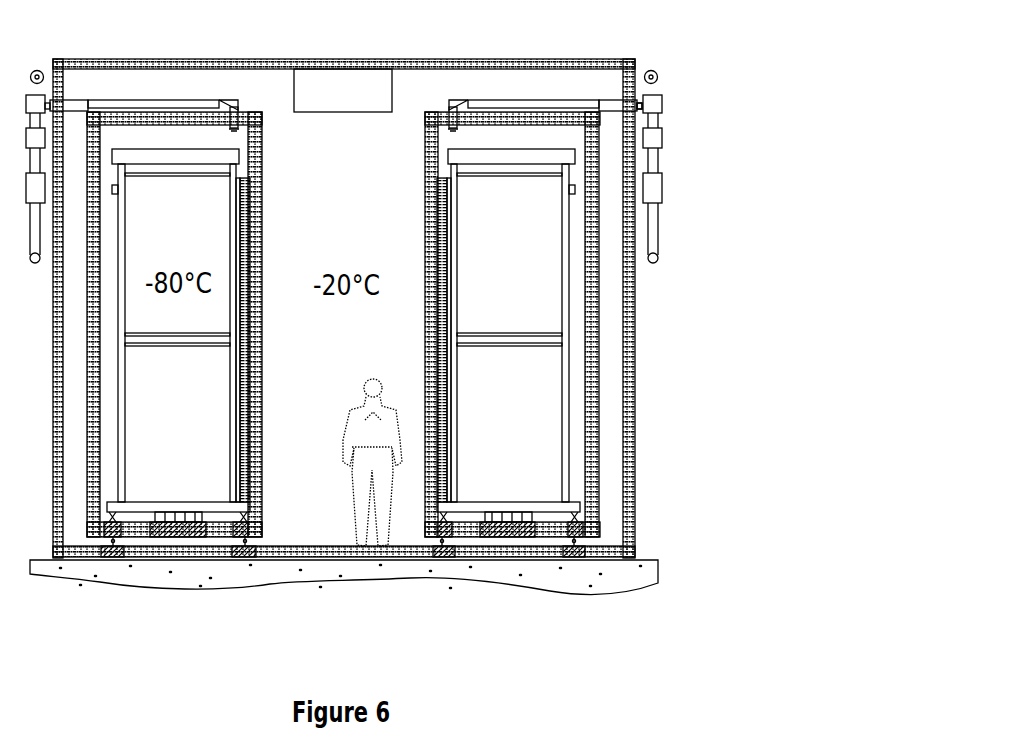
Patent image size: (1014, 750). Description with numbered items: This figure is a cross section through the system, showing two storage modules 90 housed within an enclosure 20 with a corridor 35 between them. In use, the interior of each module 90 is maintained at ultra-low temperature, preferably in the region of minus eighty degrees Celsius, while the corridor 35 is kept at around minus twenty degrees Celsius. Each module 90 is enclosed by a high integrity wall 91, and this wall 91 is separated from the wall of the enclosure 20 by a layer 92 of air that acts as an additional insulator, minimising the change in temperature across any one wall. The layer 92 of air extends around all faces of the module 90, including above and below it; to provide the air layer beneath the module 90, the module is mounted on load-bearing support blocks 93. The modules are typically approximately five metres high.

The enclosure 20 is at (676, 75).
The corridor 35 is at (393, 378).
The module 90 is at (512, 262).
The high integrity wall 91 is at (590, 360).
The layer of air 92 is at (606, 412).
The load-bearing support blocks 93 is at (575, 543).